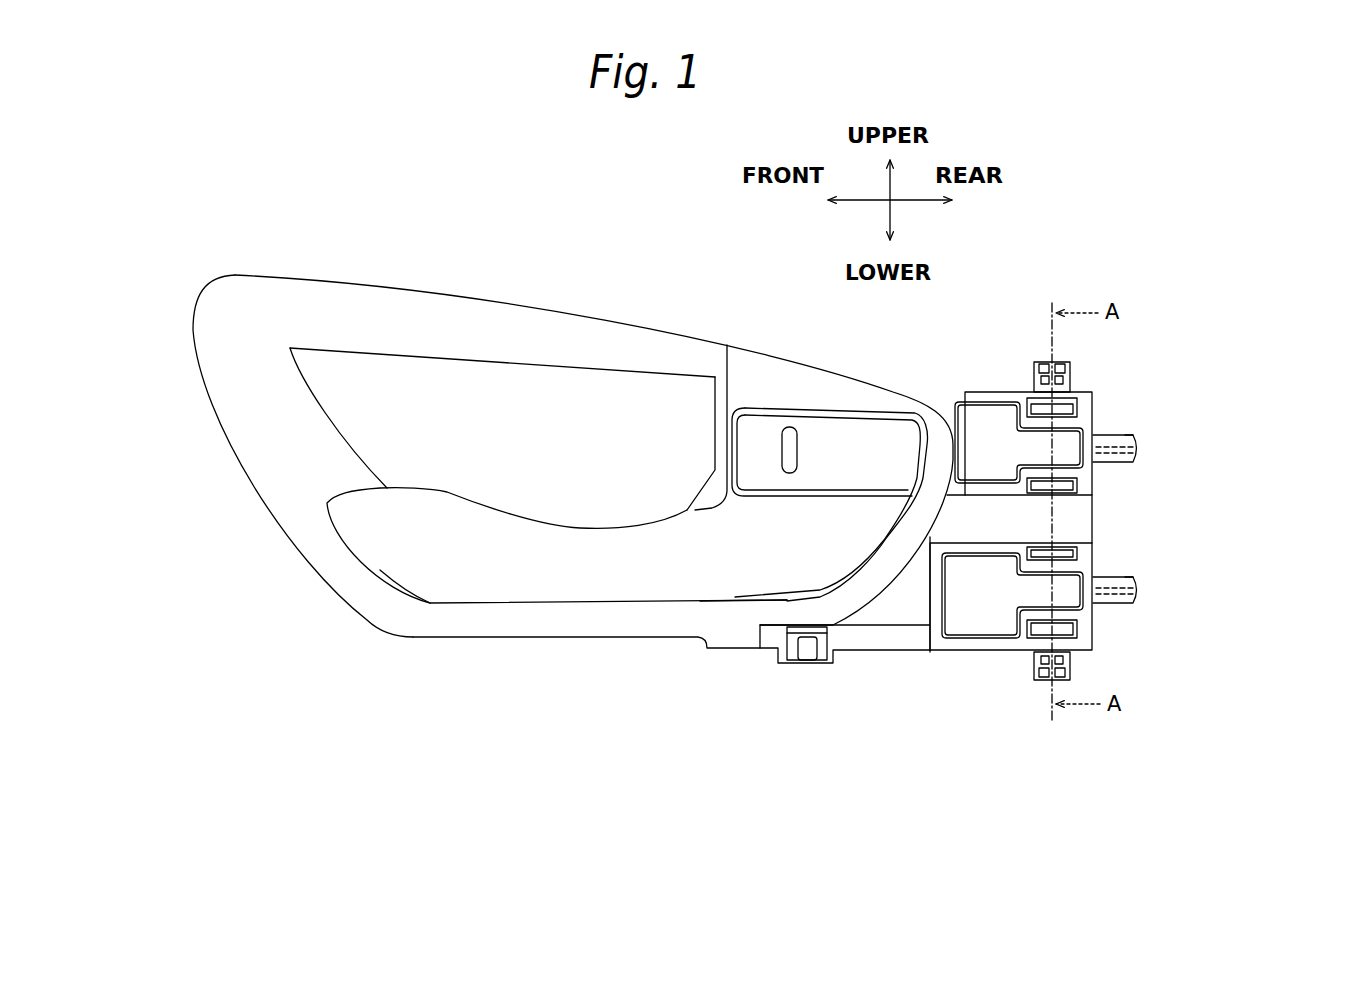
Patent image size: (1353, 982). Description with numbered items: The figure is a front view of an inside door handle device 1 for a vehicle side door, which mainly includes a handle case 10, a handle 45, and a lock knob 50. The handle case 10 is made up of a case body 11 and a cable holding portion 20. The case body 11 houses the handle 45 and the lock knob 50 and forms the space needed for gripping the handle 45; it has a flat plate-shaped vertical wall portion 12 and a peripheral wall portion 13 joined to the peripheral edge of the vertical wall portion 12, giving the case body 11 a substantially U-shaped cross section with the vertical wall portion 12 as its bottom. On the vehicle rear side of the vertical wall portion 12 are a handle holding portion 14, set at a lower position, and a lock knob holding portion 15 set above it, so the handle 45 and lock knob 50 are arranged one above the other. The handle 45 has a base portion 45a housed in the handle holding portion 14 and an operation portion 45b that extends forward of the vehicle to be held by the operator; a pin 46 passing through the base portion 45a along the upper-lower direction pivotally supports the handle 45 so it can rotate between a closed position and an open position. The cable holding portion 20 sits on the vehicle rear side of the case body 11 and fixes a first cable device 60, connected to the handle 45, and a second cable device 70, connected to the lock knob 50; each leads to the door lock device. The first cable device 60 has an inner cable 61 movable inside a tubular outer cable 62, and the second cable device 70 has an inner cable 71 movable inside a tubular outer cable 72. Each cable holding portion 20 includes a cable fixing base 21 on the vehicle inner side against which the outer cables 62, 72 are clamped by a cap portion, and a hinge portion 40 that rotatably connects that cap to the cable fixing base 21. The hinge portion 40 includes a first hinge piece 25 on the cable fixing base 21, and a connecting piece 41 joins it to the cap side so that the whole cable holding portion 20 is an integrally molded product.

The inside door handle device 1 is at (607, 232).
The handle case 10 is at (1073, 230).
The case body 11 is at (688, 334).
The vertical wall portion 12 is at (478, 385).
The peripheral wall portion 13 is at (267, 413).
The handle holding portion 14 is at (853, 587).
The lock knob holding portion 15 is at (847, 407).
The cable holding portion 20 is at (1102, 393).
The cable fixing base 21 is at (980, 425).
The first hinge piece 25 is at (1030, 375).
The hinge portion 40 is at (1036, 354).
The connecting piece 41 is at (1050, 355).
The handle 45 is at (490, 610).
The base portion 45a is at (777, 563).
The operation portion 45b is at (440, 560).
The pin 46 is at (796, 656).
The lock knob 50 is at (805, 428).
The first cable device 60 is at (1148, 560).
The inner cable 61 is at (1125, 600).
The outer cable 62 is at (1122, 580).
The second cable device 70 is at (1140, 427).
The inner cable 71 is at (1118, 453).
The outer cable 72 is at (1130, 433).